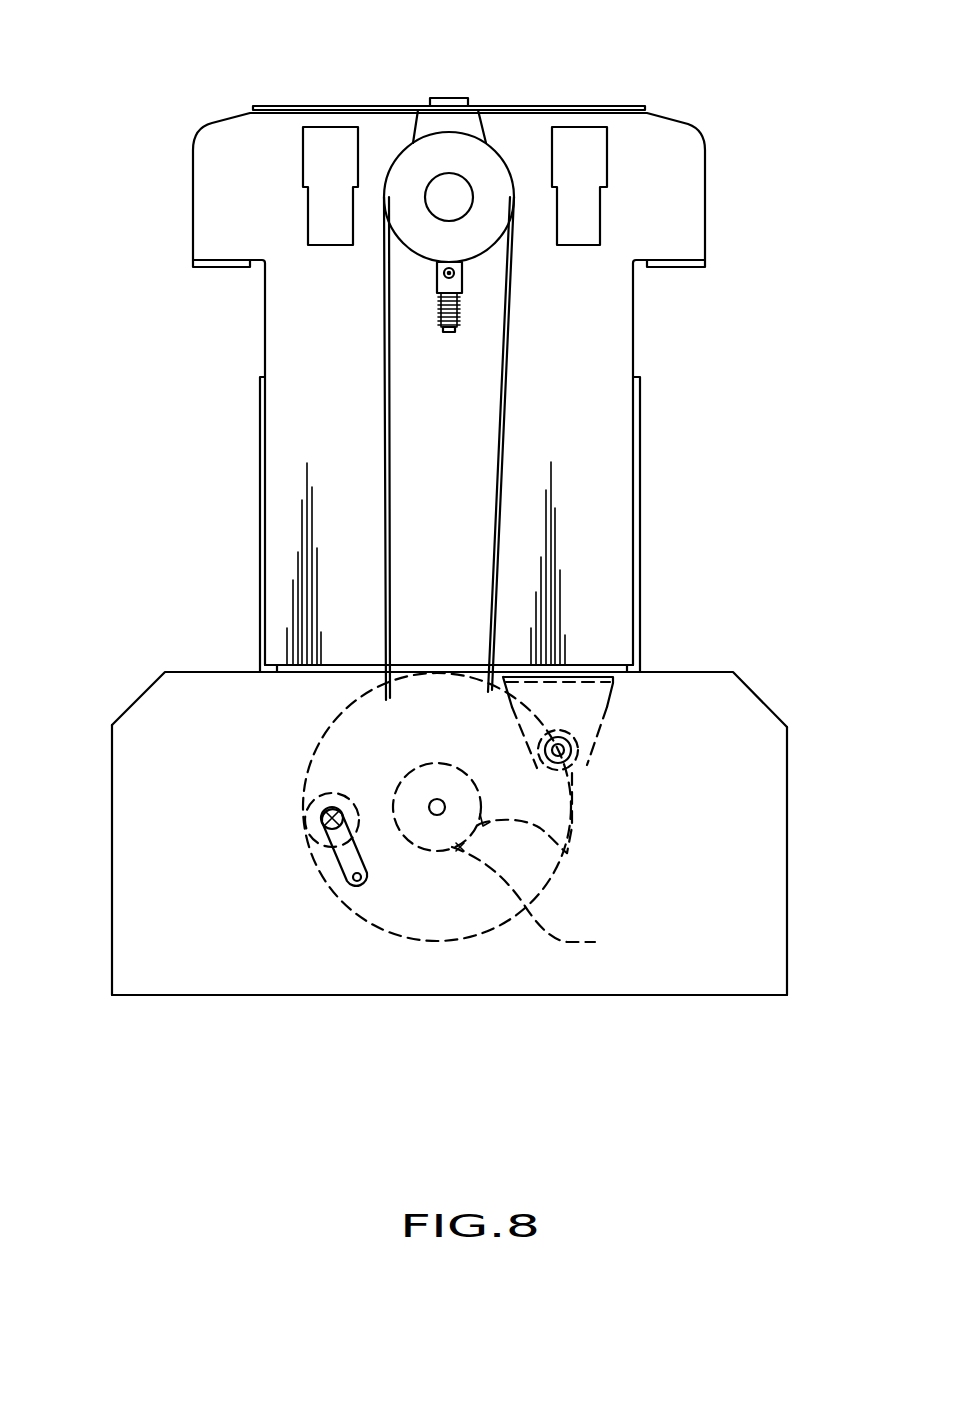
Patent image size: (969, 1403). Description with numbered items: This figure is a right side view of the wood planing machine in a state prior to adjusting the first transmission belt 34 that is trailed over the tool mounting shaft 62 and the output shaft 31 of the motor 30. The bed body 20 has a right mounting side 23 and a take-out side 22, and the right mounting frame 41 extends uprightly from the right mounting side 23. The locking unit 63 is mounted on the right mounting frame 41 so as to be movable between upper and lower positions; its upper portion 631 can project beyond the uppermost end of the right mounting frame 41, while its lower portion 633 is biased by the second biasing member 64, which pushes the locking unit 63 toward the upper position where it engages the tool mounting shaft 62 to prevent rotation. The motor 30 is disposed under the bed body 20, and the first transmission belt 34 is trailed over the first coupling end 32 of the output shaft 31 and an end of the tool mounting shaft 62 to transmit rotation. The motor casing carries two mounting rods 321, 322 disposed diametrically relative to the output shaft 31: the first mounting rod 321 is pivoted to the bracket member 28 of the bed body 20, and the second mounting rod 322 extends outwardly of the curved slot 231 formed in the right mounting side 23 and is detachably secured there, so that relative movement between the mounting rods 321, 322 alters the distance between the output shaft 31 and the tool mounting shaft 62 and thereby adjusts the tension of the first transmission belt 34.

The bed body 20 is at (694, 996).
The take-out side 22 is at (665, 672).
The right mounting side 23 is at (768, 868).
The bracket member 28 is at (598, 718).
The motor 30 is at (448, 939).
The output shaft 31 is at (542, 901).
The first coupling end 32 is at (567, 853).
The first transmission belt 34 is at (383, 362).
The right mounting frame 41 is at (683, 193).
The tool mounting shaft 62 is at (413, 172).
The locking unit 63 is at (466, 123).
The second biasing member 64 is at (460, 327).
The curved slot 231 is at (348, 878).
The first mounting rod 321 is at (573, 773).
The second mounting rod 322 is at (322, 813).
The upper portion 631 is at (442, 98).
The lower portion 633 is at (457, 300).